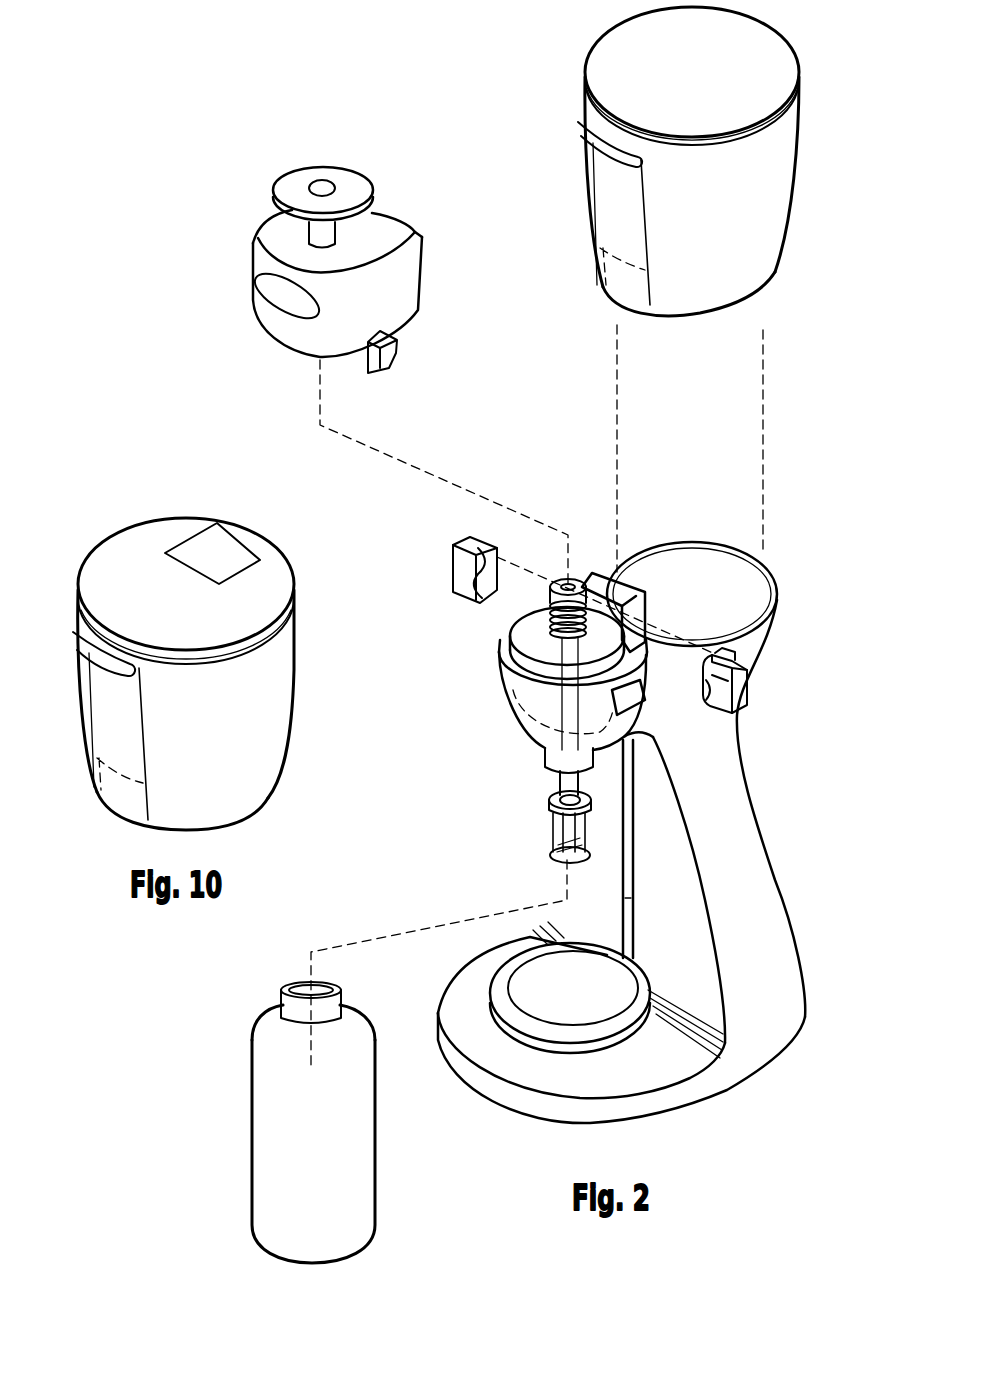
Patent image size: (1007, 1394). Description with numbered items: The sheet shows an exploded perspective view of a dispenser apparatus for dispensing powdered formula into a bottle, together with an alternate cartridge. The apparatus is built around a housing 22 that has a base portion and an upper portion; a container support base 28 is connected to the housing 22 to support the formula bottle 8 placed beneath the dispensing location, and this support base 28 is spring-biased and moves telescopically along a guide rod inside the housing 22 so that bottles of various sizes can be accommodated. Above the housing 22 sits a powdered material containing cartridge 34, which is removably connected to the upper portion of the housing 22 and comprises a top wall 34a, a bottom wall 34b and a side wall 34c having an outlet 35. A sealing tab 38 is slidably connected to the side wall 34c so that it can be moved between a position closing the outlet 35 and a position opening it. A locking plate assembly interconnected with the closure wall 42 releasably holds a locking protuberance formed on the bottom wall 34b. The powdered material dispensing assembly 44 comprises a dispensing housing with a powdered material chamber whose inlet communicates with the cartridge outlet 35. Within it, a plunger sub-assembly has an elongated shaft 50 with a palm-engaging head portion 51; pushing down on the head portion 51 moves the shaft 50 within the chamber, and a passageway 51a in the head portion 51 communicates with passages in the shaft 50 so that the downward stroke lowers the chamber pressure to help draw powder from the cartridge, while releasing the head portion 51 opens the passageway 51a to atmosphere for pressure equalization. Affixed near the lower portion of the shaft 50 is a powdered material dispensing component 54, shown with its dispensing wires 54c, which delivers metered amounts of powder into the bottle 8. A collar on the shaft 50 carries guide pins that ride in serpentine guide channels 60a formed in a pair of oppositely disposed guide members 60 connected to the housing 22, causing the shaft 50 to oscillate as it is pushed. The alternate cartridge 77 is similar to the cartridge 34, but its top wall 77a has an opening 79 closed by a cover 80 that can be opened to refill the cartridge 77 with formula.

In FIG. 2, the bottle 8 is at (360, 1122).
In FIG. 2, the housing 22 is at (618, 832).
In FIG. 2, the container support base 28 is at (485, 978).
In FIG. 2, the powdered material containing cartridge 34 is at (702, 193).
In FIG. 2, the top wall 34a is at (755, 45).
In FIG. 2, the bottom wall 34b is at (668, 295).
In FIG. 2, the side wall 34c is at (755, 213).
In FIG. 2, the outlet 35 is at (618, 285).
In FIG. 2, the sealing tab 38 is at (625, 190).
In FIG. 10, the sealing tab 38 is at (103, 727).
In FIG. 2, the closure wall 42 is at (750, 596).
In FIG. 2, the powdered material dispensing assembly 44 is at (303, 263).
In FIG. 2, the elongated shaft 50 is at (566, 783).
In FIG. 2, the finger engaging head portion 51 is at (322, 201).
In FIG. 2, the passageway 51a is at (335, 186).
In FIG. 2, the powdered material dispensing component 54 is at (530, 838).
In FIG. 2, the whisk wires 54c is at (553, 845).
In FIG. 2, the guide members 60 is at (460, 566).
In FIG. 2, the guide channels 60a is at (483, 596).
In FIG. 10, the cartridge 77 is at (190, 655).
In FIG. 10, the top wall 77a is at (258, 578).
In FIG. 10, the opening 79 is at (245, 565).
In FIG. 10, the cover 80 is at (215, 537).